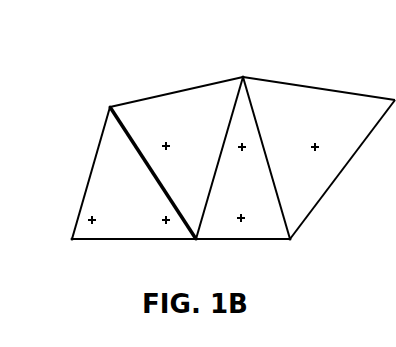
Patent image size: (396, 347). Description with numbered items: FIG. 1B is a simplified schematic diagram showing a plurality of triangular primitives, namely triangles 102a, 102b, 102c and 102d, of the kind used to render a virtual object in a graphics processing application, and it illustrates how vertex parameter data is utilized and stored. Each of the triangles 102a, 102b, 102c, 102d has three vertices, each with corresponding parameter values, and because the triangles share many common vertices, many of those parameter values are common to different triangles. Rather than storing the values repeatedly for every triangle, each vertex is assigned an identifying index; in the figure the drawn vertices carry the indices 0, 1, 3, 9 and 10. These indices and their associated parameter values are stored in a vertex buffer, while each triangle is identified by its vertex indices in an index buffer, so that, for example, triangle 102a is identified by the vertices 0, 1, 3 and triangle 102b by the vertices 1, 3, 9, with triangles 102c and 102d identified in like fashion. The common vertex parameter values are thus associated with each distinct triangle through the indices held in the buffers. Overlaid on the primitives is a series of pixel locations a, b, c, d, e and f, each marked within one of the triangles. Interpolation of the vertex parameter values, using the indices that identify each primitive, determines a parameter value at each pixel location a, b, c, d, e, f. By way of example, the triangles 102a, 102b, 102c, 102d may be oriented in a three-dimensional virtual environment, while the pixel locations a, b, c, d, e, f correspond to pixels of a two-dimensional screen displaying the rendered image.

The triangle 102a is at (97, 145).
The triangle 102b is at (180, 91).
The triangle 102c is at (230, 240).
The triangle 102d is at (355, 94).
The vertex index 0 is at (64, 250).
The vertex index 1 is at (104, 95).
The vertex index 3 is at (196, 251).
The vertex index 9 is at (243, 66).
The vertex index 10 is at (291, 251).
The pixel location a is at (96, 214).
The pixel location b is at (162, 214).
The pixel location c is at (170, 140).
The pixel location d is at (247, 212).
The pixel location e is at (240, 153).
The pixel location f is at (311, 141).